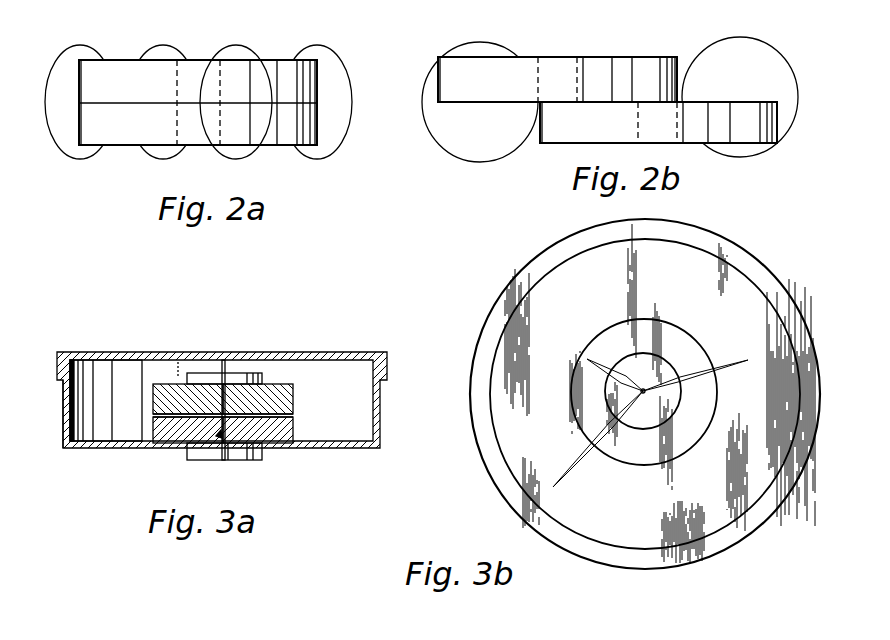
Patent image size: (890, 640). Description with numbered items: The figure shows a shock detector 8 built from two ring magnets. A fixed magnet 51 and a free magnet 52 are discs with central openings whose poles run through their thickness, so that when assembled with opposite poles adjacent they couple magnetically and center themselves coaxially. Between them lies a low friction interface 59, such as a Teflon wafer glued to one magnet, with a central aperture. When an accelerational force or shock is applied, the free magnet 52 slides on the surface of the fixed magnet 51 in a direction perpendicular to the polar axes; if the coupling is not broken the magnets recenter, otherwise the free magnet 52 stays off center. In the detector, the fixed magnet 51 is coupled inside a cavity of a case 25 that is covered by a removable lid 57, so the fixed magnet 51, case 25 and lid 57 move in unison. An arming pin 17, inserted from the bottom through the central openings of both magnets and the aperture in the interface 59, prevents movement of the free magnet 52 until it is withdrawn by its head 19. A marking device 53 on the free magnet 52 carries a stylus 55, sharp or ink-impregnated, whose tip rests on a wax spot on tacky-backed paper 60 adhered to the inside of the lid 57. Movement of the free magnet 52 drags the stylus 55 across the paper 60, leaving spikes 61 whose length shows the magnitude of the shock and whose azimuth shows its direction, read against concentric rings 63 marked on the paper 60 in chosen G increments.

In FIG. 3A, the detector 8 is at (243, 391).
In FIG. 3A, the arming pin 17 is at (218, 435).
In FIG. 3A, the head 19 is at (241, 452).
In FIG. 3A, the case 25 is at (67, 436).
In FIG. 2A, the fixed magnet 51 is at (268, 137).
In FIG. 2B, the fixed magnet 51 is at (553, 135).
In FIG. 3A, the fixed magnet 51 is at (285, 450).
In FIG. 2A, the free magnet 52 is at (268, 62).
In FIG. 2B, the free magnet 52 is at (507, 72).
In FIG. 3A, the free magnet 52 is at (295, 390).
In FIG. 3A, the marking device 53 is at (204, 379).
In FIG. 3A, the stylus 55 is at (223, 372).
In FIG. 3A, the lid 57 is at (330, 352).
In FIG. 3B, the lid 57 is at (738, 250).
In FIG. 3A, the interface 59 is at (287, 405).
In FIG. 3A, the paper 60 is at (117, 360).
In FIG. 3B, the paper 60 is at (612, 532).
In FIG. 3B, the spikes 61 is at (723, 357).
In FIG. 3B, the concentric rings 63 is at (673, 418).